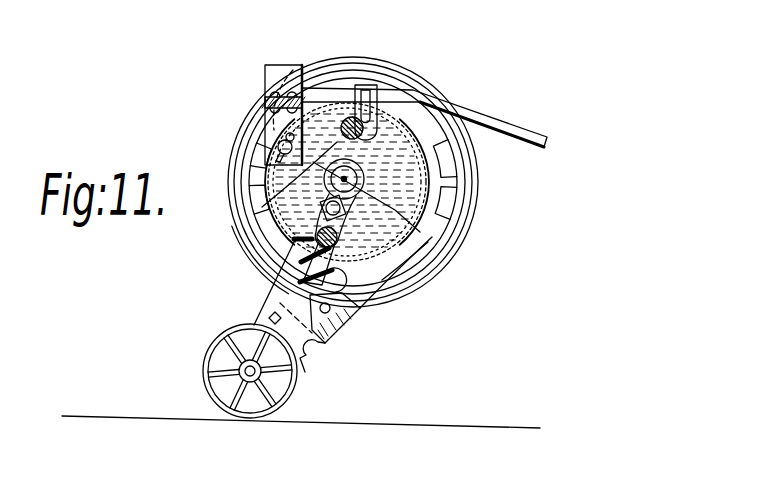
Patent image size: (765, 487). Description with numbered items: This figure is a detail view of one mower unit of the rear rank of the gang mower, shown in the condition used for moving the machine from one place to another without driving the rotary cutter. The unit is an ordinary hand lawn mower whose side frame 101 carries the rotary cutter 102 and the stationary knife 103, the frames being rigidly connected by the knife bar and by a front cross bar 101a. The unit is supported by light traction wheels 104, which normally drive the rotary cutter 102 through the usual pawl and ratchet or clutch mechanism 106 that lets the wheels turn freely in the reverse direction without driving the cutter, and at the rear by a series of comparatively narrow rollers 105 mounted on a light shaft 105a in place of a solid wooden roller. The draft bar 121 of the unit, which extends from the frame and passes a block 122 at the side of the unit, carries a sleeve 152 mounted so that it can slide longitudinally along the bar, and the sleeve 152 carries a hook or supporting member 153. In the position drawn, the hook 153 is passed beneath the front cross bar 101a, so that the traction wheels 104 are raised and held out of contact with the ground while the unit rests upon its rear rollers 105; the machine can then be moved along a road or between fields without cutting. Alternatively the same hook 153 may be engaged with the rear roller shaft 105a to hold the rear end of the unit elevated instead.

The side frame 101 is at (445, 182).
The cross bar 101a is at (377, 132).
The rotary cutter 102 is at (392, 278).
The stationary knife 103 is at (352, 326).
The traction wheels 104 is at (473, 220).
The rollers 105 is at (203, 368).
The light shaft 105a is at (248, 366).
The pawl 106 is at (277, 146).
The draft bar 121 is at (453, 103).
The guide block 122 is at (278, 64).
The sleeve 152 is at (362, 85).
The hook or supporting member 153 is at (262, 207).